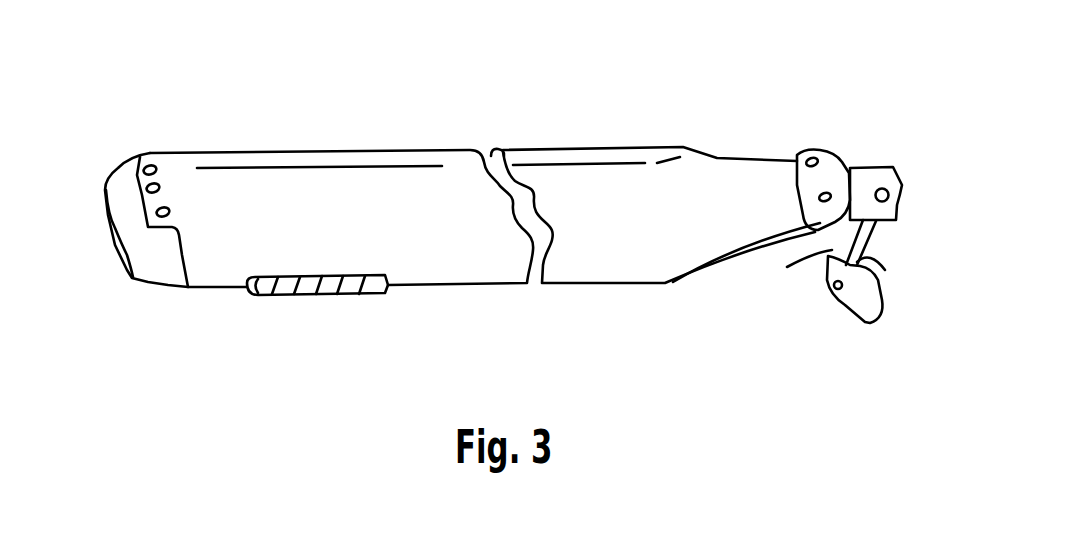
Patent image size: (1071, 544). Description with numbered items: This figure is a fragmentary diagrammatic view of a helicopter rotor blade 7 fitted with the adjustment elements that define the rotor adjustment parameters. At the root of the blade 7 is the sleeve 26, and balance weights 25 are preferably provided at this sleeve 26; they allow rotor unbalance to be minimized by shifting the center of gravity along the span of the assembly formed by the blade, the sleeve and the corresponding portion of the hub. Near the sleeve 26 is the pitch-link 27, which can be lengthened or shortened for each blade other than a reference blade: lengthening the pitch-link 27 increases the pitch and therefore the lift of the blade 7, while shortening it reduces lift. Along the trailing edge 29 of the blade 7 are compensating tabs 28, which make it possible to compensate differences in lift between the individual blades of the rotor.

The blade 7 is at (364, 165).
The balance weights 25 is at (896, 208).
The sleeve 26 is at (867, 166).
The pitch-link 27 is at (787, 267).
The compensating tabs 28 is at (265, 295).
The trailing edge 29 is at (231, 300).